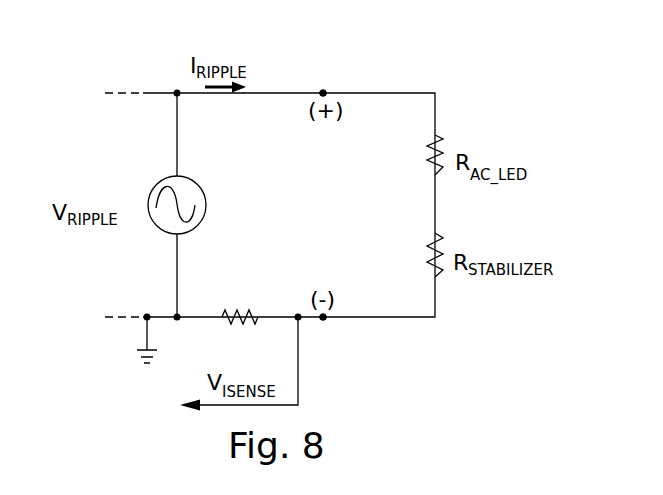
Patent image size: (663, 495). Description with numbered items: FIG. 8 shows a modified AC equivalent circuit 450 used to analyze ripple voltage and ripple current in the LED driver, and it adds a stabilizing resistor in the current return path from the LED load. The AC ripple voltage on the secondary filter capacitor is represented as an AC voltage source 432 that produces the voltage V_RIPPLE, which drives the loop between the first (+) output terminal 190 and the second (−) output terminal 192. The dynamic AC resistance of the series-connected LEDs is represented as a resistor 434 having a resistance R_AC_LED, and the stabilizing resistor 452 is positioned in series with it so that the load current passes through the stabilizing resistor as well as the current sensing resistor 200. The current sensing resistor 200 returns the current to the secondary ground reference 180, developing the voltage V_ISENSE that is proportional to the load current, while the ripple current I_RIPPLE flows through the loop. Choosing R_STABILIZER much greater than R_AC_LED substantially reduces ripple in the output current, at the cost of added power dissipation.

The modified AC equivalent circuit 450 is at (133, 81).
The AC voltage source 432 is at (197, 182).
The first (+) output terminal 190 is at (324, 92).
The resistor 434 is at (430, 157).
The stabilizing resistor 452 is at (430, 253).
The second (−) output terminal 192 is at (324, 320).
The current sensing resistor 200 is at (237, 312).
The secondary ground reference 180 is at (142, 349).